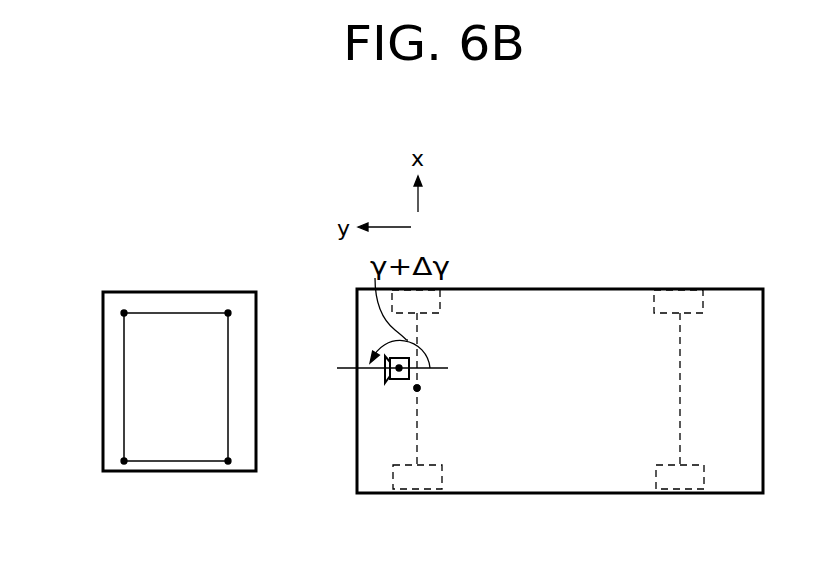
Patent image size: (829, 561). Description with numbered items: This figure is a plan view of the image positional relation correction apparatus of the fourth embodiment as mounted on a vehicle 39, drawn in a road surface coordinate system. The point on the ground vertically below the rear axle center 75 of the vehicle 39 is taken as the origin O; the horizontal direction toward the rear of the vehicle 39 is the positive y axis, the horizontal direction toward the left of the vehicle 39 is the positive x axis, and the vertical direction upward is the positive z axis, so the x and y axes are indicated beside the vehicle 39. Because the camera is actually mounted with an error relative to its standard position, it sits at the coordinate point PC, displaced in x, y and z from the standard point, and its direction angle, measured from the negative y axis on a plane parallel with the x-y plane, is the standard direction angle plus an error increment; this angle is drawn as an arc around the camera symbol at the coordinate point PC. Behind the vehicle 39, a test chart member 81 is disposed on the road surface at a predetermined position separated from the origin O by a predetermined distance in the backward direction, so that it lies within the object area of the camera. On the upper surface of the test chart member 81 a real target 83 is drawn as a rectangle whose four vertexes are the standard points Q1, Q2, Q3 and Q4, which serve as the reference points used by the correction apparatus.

The test chart member 81 is at (163, 292).
The real target 83 is at (200, 313).
The standard point Q1 is at (124, 461).
The standard point Q2 is at (124, 313).
The standard point Q3 is at (228, 313).
The standard point Q4 is at (228, 461).
The vehicle 39 is at (620, 290).
The rear axle center 75 is at (417, 388).
The origin O is at (486, 415).
The coordinate point PC is at (400, 367).